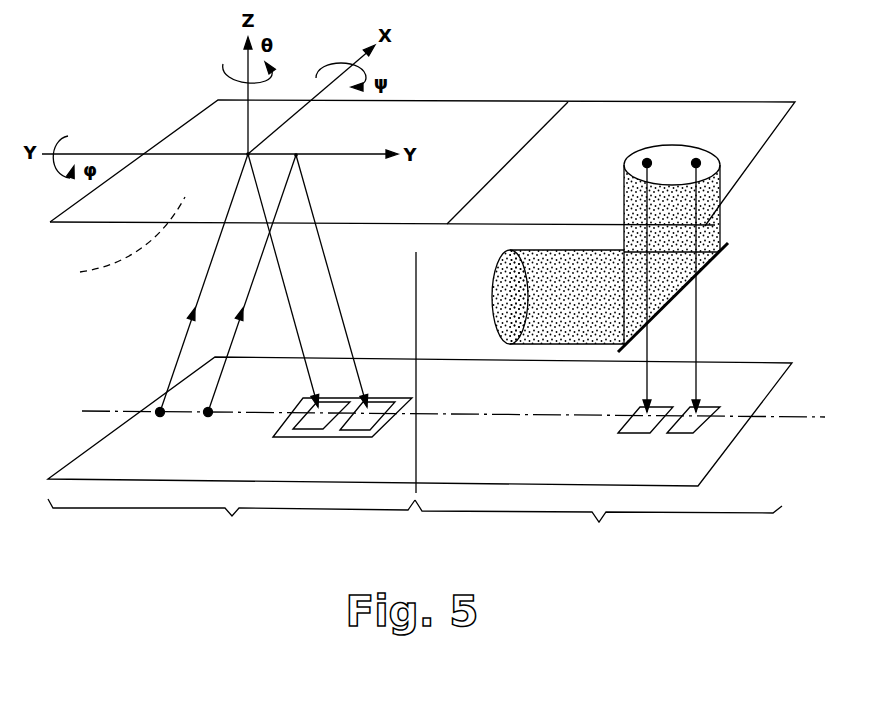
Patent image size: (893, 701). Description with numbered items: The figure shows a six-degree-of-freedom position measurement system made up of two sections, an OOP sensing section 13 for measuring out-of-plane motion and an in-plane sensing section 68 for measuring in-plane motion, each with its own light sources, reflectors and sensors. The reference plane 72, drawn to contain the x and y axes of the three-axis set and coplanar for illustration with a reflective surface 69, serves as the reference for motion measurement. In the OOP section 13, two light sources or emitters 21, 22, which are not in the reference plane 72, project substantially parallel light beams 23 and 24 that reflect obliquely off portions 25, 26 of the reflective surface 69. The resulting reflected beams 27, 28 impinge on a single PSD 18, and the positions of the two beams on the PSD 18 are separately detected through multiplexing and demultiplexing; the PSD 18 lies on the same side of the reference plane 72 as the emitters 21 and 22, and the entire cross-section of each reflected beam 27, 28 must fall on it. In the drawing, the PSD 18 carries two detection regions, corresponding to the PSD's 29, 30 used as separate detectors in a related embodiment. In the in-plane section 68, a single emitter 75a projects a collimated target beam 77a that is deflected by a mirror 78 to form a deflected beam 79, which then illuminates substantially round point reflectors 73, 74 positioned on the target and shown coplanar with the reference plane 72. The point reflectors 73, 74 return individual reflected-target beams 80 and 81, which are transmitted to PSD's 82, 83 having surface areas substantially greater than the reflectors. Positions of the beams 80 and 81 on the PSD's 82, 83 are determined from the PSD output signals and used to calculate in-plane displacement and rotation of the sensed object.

The OOP sensing section 13 is at (231, 528).
The PSD 18 is at (329, 424).
The first beam emitter 21 is at (158, 410).
The second beam emitter 22 is at (208, 414).
The first projected beam 23 is at (212, 263).
The second projected beam 24 is at (262, 263).
The portion of reflective surface 25 is at (247, 152).
The portion of reflective surface 26 is at (297, 153).
The reflected beam 27 is at (332, 278).
The reflected beam 28 is at (283, 278).
The PSD 29 is at (310, 431).
The PSD 30 is at (348, 432).
The in-plane sensing section 68 is at (598, 531).
The reflective surface 69 is at (115, 242).
The reference plane 72 is at (750, 167).
The point reflector 73 is at (645, 161).
The point reflector 74 is at (698, 161).
The emitter 75a is at (490, 310).
The target beam 77a is at (527, 319).
The mirror 78 is at (703, 268).
The deflected beam 79 is at (730, 224).
The reflected-target beam 80 is at (697, 340).
The reflected-target beam 81 is at (645, 373).
The PSD 82 is at (682, 437).
The PSD 83 is at (633, 437).